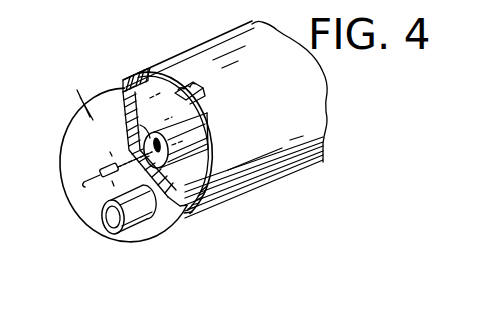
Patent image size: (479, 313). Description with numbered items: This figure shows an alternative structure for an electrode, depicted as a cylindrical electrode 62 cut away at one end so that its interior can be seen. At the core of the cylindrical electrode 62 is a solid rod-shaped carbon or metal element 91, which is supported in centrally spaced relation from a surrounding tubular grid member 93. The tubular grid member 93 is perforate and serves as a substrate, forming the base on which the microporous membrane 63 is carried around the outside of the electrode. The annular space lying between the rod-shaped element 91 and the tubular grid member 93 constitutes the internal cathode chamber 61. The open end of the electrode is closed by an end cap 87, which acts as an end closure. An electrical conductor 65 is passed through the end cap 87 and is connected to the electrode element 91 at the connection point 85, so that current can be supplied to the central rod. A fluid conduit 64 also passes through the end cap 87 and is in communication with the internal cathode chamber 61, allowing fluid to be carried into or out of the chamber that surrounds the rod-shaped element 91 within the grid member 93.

The internal cathode chamber 61 is at (197, 168).
The cylindrical electrode 62 is at (240, 215).
The microporous membrane 63 is at (197, 63).
The fluid conduit 64 is at (107, 228).
The electrical conductor 65 is at (90, 177).
The connection point 85 is at (132, 123).
The end cap 87 is at (170, 202).
The rod-shaped carbon or metal element 91 is at (182, 136).
The tubular grid member 93 is at (197, 98).